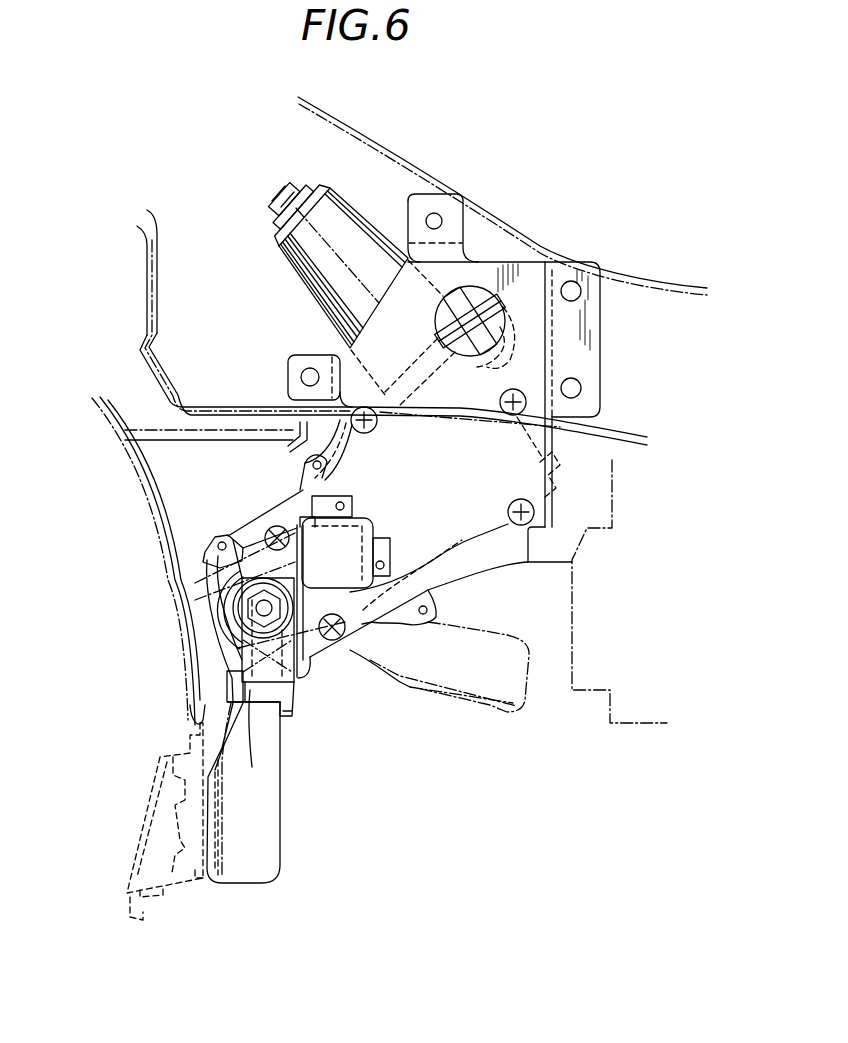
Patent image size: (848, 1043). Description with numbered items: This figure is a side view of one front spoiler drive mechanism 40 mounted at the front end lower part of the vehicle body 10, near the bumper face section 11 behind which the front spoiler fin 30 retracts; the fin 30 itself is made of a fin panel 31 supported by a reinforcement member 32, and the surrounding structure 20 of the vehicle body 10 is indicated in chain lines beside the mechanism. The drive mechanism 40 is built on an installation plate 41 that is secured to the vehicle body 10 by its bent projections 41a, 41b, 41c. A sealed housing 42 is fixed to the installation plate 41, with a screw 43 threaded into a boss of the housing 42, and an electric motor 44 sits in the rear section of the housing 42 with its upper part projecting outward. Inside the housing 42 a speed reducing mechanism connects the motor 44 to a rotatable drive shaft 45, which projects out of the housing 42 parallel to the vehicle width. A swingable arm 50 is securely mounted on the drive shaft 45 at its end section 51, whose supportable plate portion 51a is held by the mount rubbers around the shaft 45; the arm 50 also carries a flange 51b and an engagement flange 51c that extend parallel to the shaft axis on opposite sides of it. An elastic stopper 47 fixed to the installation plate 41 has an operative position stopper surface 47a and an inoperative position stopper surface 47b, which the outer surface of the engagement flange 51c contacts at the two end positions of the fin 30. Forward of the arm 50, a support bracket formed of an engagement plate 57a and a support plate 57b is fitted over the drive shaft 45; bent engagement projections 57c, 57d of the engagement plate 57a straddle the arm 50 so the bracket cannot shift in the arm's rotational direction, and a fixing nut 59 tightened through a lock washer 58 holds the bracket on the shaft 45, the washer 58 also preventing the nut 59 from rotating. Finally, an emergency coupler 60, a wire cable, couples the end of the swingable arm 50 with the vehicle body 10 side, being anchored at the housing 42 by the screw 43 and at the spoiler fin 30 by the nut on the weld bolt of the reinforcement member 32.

The vehicle body 10 is at (404, 158).
The bumper face section 11 is at (156, 521).
The seat 20 is at (427, 766).
The front spoiler fin 30 is at (140, 830).
The fin panel 31 is at (133, 892).
The reinforcement member 32 is at (196, 880).
The front spoiler drive mechanism 40 is at (435, 352).
The installation plate 41 is at (540, 352).
The bent projection 41a is at (599, 350).
The bent projection 41b is at (456, 204).
The bent projection 41c is at (292, 370).
The sealed housing 42 is at (472, 569).
The screw 43 is at (378, 428).
The electric motor 44 is at (296, 264).
The drive shaft 45 is at (226, 628).
The elastic stopper 47 is at (374, 521).
The operative position stopper surface 47a is at (304, 519).
The inoperative position stopper surface 47b is at (378, 525).
The swingable arm 50 is at (282, 812).
The end section 51 is at (254, 701).
The supportable plate portion 51a is at (232, 665).
The flange 51b is at (224, 617).
The engagement flange 51c is at (335, 578).
The engagement plate 57a is at (289, 697).
The support plate 57b is at (268, 718).
The engagement projection 57c is at (200, 706).
The engagement projection 57d is at (290, 718).
The lock washer 58 is at (245, 597).
The fixing nut 59 is at (258, 607).
The emergency coupler 60 is at (246, 692).